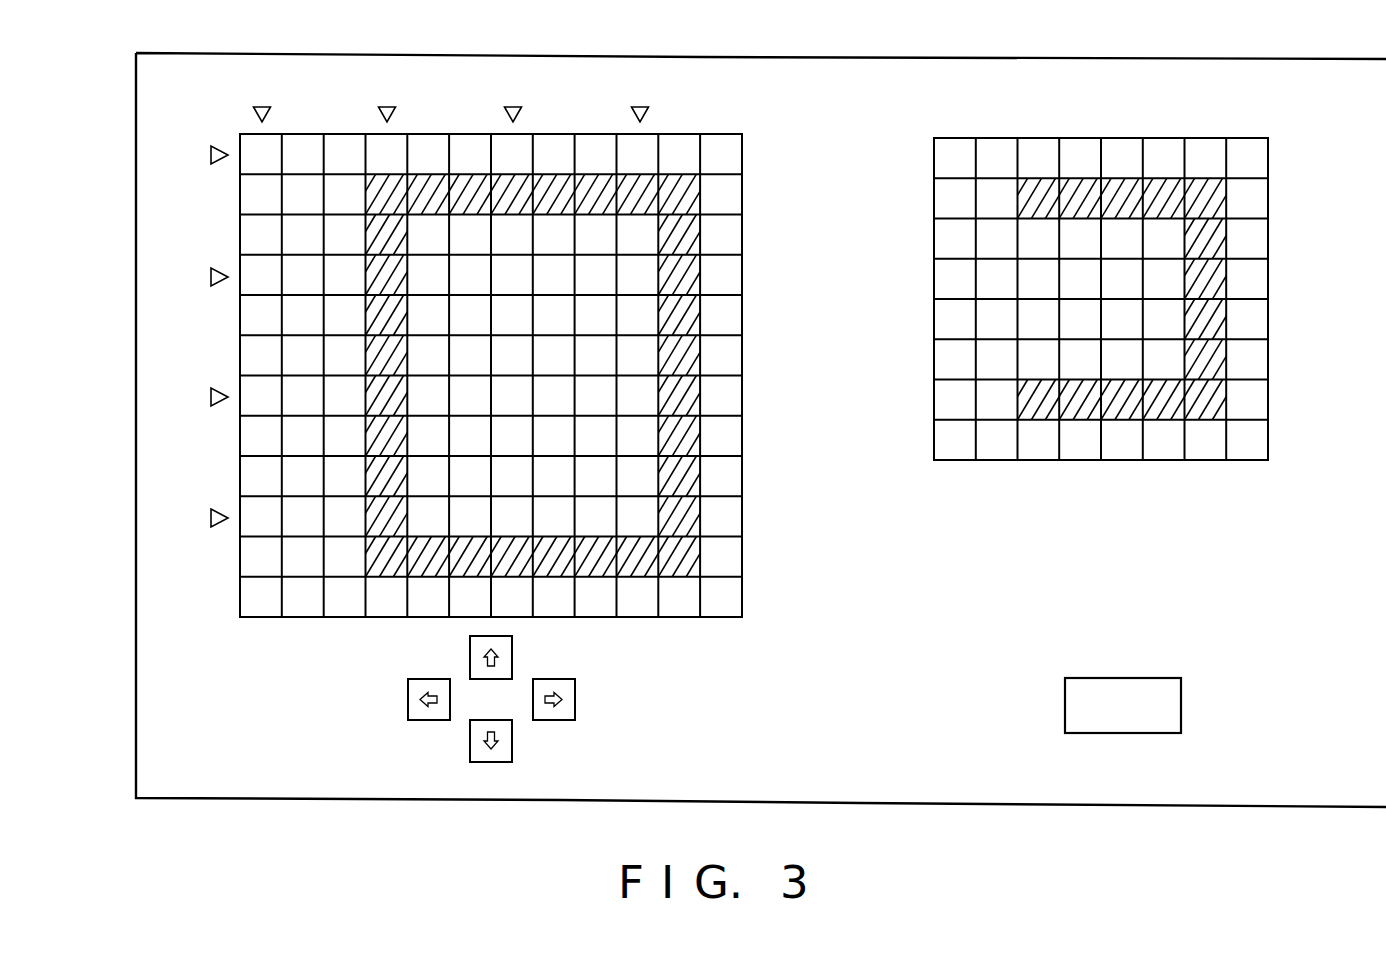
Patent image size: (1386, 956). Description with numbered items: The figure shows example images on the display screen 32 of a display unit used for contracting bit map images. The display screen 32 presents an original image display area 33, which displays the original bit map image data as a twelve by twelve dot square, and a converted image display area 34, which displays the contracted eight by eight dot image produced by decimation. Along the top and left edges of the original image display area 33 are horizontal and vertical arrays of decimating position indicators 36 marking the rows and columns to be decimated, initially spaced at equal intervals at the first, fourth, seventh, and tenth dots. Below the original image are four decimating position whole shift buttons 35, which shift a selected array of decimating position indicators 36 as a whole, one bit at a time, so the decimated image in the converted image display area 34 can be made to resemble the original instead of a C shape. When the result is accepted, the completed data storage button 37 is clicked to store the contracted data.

The display screen 32 is at (1262, 59).
The original image display area 33 is at (746, 153).
The converted image display area 34 is at (1218, 138).
The decimating position whole shift buttons 35 is at (536, 732).
The decimating position indicators 36 is at (262, 106).
The completed data storage button 37 is at (1181, 708).